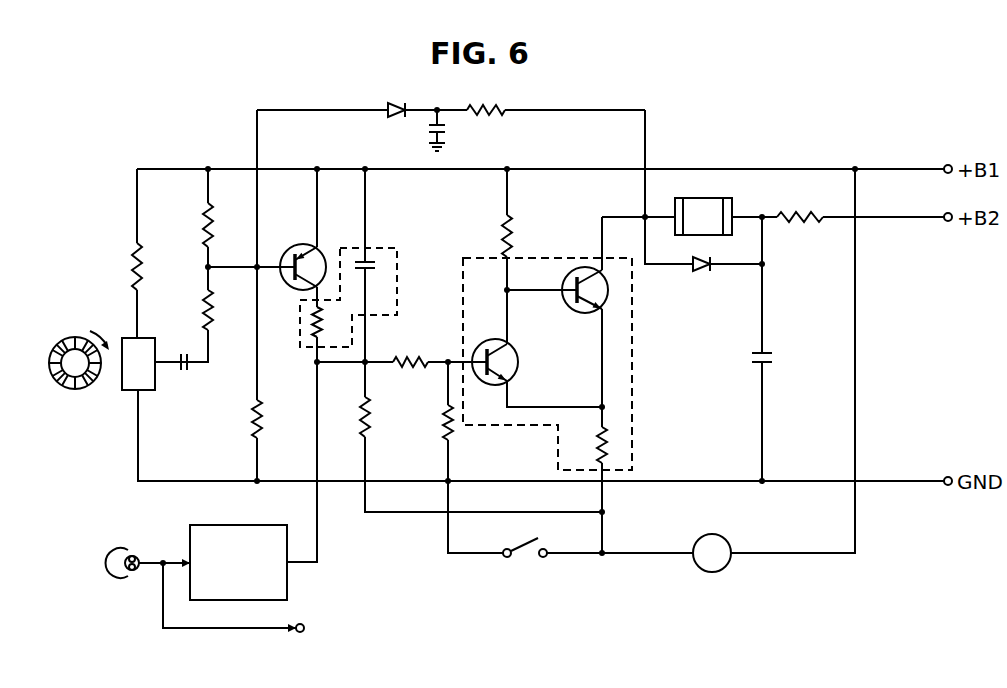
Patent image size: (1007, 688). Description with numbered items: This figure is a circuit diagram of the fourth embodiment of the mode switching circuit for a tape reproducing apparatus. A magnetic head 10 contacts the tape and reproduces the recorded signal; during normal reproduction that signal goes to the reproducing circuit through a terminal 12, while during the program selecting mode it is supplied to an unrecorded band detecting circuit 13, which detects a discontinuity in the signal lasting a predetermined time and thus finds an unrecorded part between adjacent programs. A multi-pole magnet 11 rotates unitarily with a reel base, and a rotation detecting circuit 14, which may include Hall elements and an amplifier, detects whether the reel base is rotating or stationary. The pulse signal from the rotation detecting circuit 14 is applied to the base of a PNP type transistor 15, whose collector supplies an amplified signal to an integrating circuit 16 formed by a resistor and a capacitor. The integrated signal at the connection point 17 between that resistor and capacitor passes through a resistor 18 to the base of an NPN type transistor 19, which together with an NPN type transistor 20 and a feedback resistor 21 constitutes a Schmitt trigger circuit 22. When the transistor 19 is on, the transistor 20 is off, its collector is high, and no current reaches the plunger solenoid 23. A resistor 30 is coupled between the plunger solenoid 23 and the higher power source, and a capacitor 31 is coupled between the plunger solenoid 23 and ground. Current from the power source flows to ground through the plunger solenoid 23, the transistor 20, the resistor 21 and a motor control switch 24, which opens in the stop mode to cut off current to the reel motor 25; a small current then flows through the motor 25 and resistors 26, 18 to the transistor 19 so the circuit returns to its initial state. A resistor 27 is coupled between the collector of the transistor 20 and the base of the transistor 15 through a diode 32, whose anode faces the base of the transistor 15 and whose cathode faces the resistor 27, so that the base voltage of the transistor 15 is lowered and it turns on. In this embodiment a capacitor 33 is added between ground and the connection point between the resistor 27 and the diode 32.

The magnetic head 10 is at (120, 548).
The multi-pole magnet 11 is at (70, 337).
The terminal 12 is at (307, 623).
The unrecorded band detecting circuit 13 is at (218, 523).
The rotation detecting circuit 14 is at (147, 338).
The PNP type transistor 15 is at (295, 245).
The integrating circuit 16 is at (373, 247).
The connection point 17 is at (358, 367).
The resistor 18 is at (415, 355).
The NPN type transistor 19 is at (512, 347).
The NPN type transistor 20 is at (577, 265).
The feedback resistor 21 is at (608, 437).
The Schmitt trigger circuit 22 is at (633, 372).
The plunger solenoid 23 is at (685, 235).
The motor control switch 24 is at (527, 550).
The reel motor 25 is at (720, 571).
The resistor 26 is at (372, 415).
The resistor 27 is at (490, 105).
The resistor 30 is at (797, 222).
The capacitor 31 is at (773, 357).
The diode 32 is at (395, 105).
The capacitor 33 is at (448, 127).